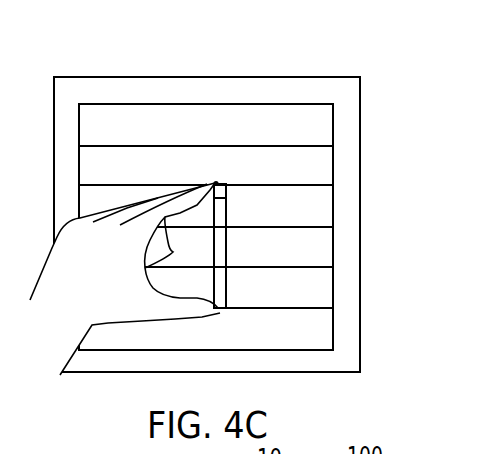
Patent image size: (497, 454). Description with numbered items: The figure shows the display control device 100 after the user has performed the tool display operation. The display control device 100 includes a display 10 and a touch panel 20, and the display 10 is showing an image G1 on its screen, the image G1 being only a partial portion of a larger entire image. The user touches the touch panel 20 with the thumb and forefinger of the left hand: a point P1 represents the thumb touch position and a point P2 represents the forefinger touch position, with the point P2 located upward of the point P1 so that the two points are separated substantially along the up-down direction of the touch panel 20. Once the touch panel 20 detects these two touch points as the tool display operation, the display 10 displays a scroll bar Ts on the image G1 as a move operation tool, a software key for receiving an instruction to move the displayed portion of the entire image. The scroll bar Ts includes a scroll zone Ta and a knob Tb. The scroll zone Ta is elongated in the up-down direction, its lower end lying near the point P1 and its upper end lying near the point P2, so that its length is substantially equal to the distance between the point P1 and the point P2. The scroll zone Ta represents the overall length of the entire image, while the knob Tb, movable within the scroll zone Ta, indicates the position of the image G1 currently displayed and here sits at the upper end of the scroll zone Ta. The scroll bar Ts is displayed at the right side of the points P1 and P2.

The display control device 100 is at (353, 48).
The display 10 is at (234, 64).
The touch panel 20 is at (280, 89).
The image G1 is at (147, 105).
The point P1 is at (217, 312).
The point P2 is at (216, 182).
The scroll zone Ta is at (226, 250).
The knob Tb is at (226, 192).
The scroll bar Ts is at (397, 190).